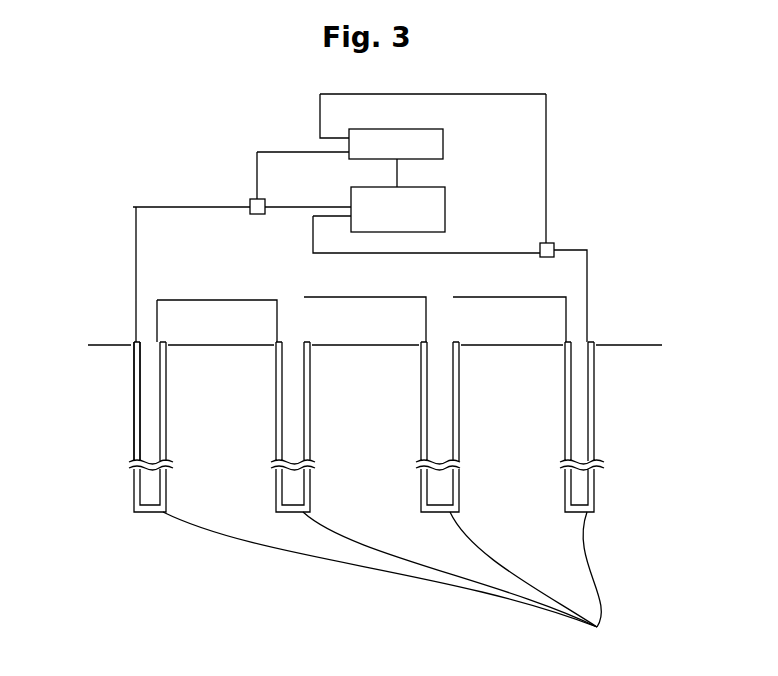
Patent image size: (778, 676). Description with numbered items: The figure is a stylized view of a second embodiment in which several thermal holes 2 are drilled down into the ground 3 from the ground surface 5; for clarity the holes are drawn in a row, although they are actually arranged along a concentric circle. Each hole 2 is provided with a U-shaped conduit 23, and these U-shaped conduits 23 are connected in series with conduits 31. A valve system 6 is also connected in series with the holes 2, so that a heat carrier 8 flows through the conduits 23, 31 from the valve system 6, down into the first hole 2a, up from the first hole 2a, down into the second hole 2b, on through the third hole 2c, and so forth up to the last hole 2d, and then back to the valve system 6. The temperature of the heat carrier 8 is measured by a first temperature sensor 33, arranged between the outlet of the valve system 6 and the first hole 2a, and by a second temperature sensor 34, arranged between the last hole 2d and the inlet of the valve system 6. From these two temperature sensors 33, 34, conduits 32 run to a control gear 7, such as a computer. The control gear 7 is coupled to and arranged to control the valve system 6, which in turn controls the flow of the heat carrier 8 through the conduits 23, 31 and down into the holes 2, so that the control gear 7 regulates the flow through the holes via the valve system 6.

The thermal holes 2 is at (383, 582).
The first hole 2a is at (136, 407).
The second hole 2b is at (275, 406).
The third hole 2c is at (420, 406).
The last hole 2d is at (564, 406).
The ground 3 is at (640, 457).
The ground surface 5 is at (640, 344).
The valve system 6 is at (445, 214).
The control gear 7 is at (443, 151).
The heat carrier 8 is at (587, 277).
The U-shaped conduits 23 is at (133, 373).
The conduits 31 is at (167, 207).
The conduits 32 is at (287, 152).
The first temperature sensor 33 is at (250, 199).
The second temperature sensor 34 is at (553, 243).